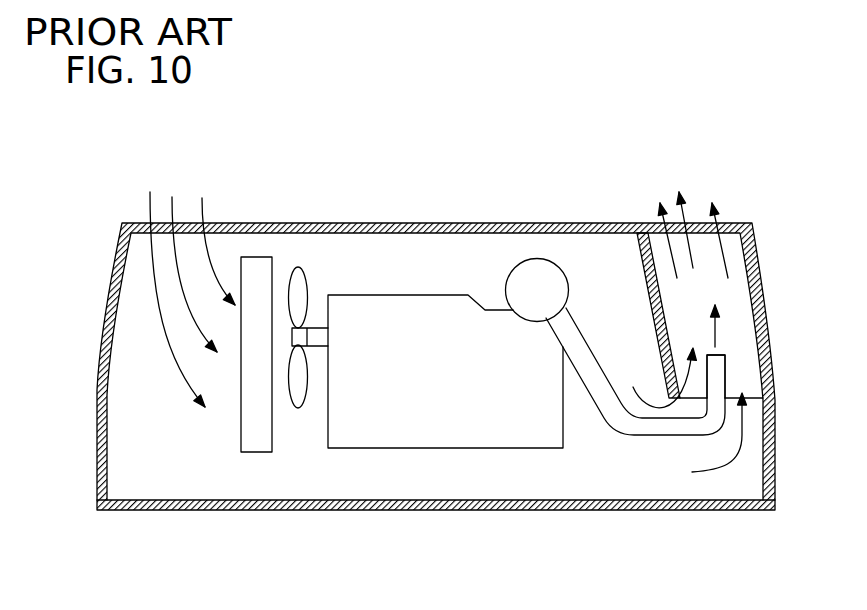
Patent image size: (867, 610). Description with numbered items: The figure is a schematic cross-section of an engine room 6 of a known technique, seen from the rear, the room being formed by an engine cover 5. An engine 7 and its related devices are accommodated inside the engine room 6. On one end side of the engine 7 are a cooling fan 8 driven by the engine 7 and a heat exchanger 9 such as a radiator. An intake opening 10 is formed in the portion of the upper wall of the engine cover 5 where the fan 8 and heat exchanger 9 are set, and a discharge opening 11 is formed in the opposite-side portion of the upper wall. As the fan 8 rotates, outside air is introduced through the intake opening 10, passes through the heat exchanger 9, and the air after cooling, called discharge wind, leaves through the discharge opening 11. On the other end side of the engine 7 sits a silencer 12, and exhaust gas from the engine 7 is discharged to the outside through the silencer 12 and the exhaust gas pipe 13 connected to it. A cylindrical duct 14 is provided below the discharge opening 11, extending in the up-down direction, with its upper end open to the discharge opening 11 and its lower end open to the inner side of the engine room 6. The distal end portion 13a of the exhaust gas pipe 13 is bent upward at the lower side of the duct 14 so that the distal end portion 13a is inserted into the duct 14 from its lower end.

The engine cover 5 is at (440, 222).
The engine room 6 is at (458, 488).
The engine 7 is at (396, 294).
The cooling fan 8 is at (298, 267).
The heat exchanger 9 is at (252, 257).
The intake opening 10 is at (186, 222).
The discharge opening 11 is at (686, 232).
The silencer 12 is at (540, 259).
The exhaust gas pipe 13 is at (648, 436).
The distal end portion 13a is at (728, 370).
The duct 14 is at (650, 300).